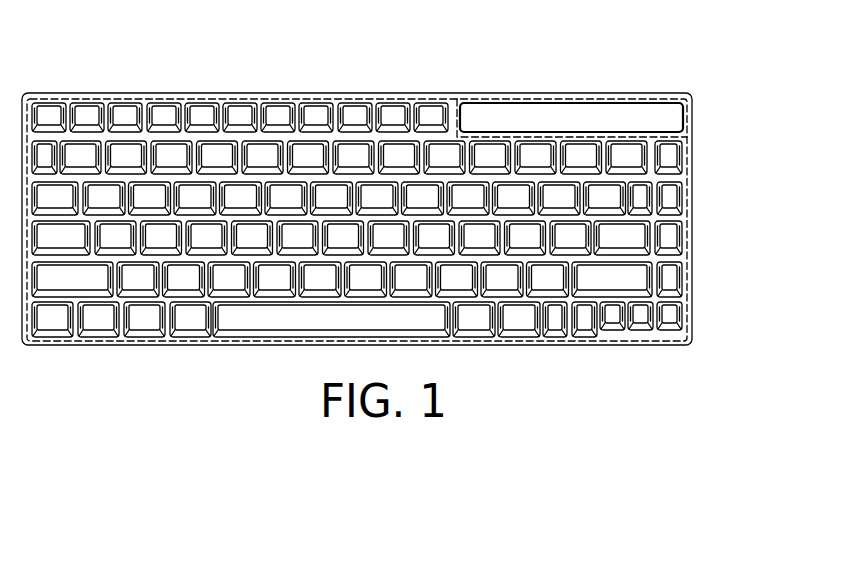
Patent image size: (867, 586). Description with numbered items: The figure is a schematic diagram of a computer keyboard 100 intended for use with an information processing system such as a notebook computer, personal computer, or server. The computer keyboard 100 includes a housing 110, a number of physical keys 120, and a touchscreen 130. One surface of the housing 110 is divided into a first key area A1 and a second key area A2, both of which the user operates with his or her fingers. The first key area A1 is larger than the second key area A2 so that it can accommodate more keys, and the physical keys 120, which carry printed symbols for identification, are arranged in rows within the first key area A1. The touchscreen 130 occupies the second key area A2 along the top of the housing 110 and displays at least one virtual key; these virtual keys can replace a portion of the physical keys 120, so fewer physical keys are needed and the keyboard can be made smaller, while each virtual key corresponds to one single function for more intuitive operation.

The computer keyboard 100 is at (684, 59).
The housing 110 is at (693, 157).
The physical keys 120 is at (640, 315).
The touchscreen 130 is at (572, 106).
The first key area A1 is at (695, 201).
The second key area A2 is at (694, 110).